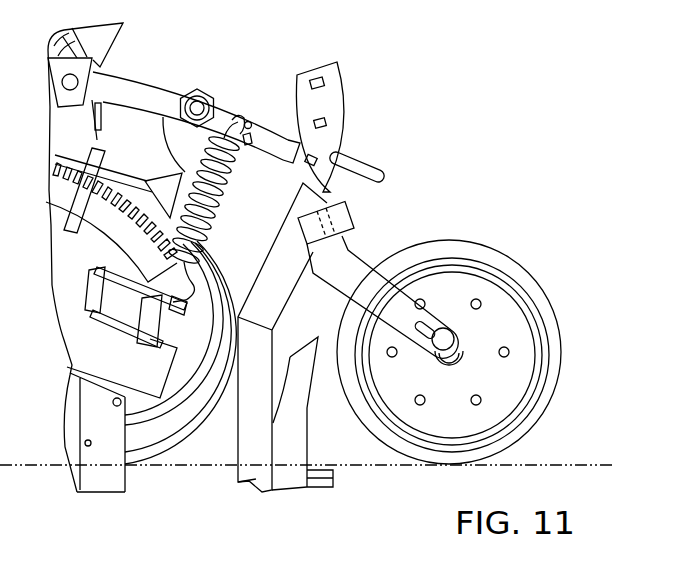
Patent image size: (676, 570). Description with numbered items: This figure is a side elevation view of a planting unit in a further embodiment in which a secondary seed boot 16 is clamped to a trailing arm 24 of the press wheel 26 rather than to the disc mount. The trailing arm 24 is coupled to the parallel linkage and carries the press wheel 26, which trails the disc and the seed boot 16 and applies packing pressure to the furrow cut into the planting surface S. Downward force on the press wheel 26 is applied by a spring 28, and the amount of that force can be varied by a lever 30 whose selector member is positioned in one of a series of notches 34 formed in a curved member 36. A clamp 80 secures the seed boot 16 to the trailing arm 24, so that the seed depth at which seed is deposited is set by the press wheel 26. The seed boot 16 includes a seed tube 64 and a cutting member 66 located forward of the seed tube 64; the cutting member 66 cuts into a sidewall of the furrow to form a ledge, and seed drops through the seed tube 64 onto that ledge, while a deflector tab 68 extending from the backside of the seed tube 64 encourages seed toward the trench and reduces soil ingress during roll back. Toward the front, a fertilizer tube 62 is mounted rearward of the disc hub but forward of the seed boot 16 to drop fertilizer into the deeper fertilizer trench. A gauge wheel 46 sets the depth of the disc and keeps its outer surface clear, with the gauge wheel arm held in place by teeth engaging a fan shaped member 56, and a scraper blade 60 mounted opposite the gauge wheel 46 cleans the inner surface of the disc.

The seed boot 16 is at (288, 497).
The trailing arm 24 is at (372, 240).
The press wheel 26 is at (497, 250).
The spring 28 is at (235, 188).
The lever 30 is at (362, 176).
The notches 34 is at (322, 125).
The curved member 36 is at (317, 70).
The gauge wheel 46 is at (155, 449).
The fan shaped member 56 is at (147, 187).
The scraper blade 60 is at (88, 446).
The fertilizer tube 62 is at (172, 116).
The seed tube 64 is at (310, 370).
The cutting member 66 is at (240, 433).
The deflector tab 68 is at (337, 487).
The clamp 80 is at (357, 219).
The planting surface S is at (575, 465).